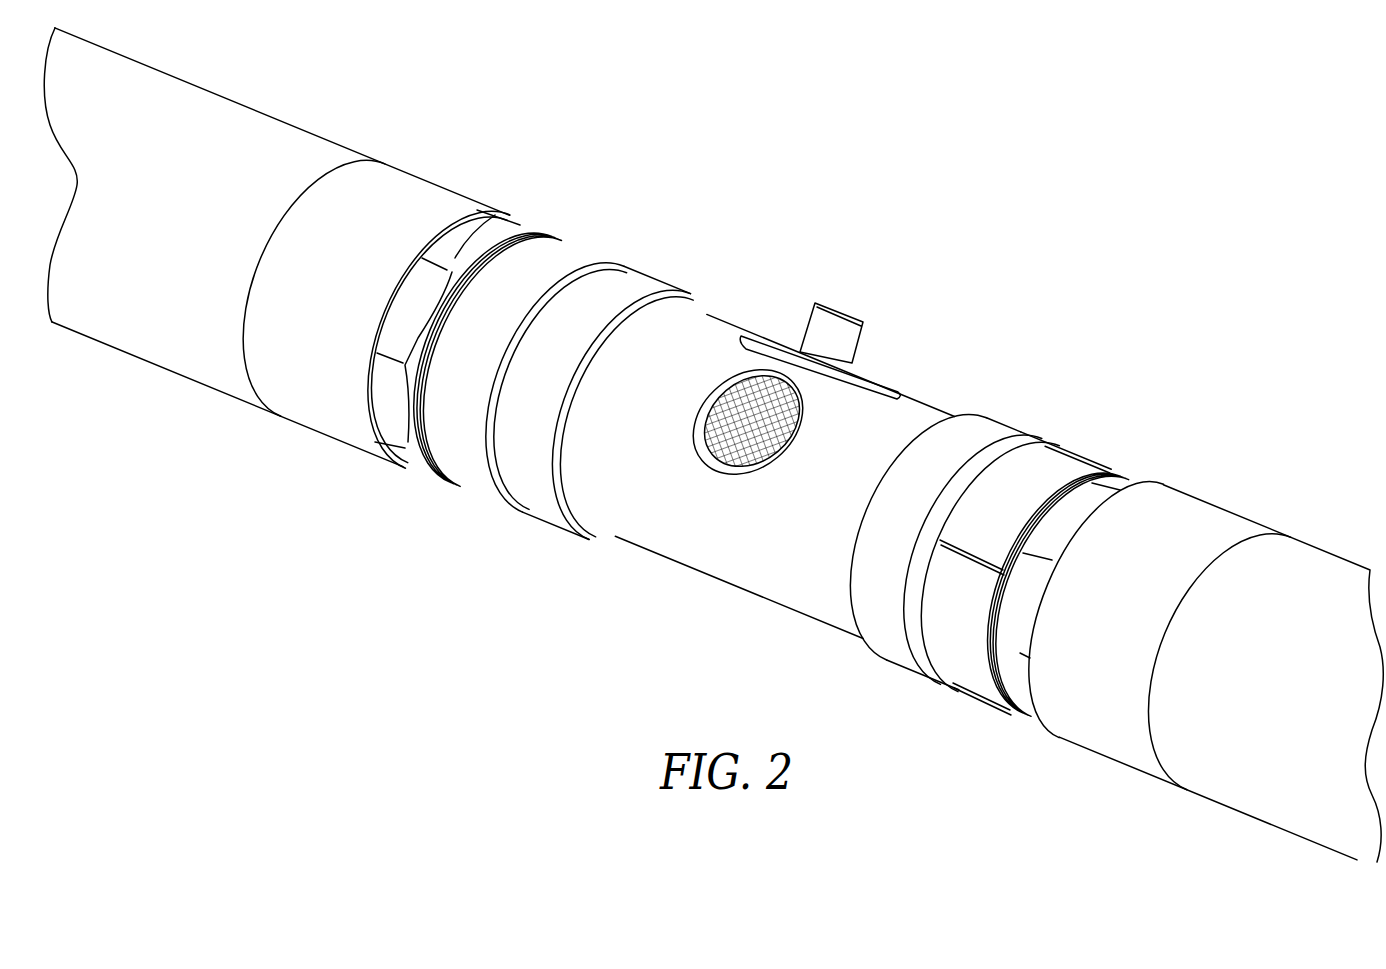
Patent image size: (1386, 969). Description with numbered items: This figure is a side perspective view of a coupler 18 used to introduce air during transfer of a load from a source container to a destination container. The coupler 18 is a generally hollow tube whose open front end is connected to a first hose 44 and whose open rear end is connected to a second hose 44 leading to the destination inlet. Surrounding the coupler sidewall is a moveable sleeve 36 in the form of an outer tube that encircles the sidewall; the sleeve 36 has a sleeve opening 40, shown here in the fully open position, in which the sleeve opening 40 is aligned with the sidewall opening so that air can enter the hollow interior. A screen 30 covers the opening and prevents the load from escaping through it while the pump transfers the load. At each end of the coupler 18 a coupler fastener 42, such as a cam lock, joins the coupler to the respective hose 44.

The coupler 18 is at (725, 311).
The screen 30 is at (765, 395).
The moveable sleeve 36 is at (900, 423).
The sleeve opening 40 is at (690, 461).
The coupler fastener 42 is at (553, 253).
The hose 44 is at (303, 148).